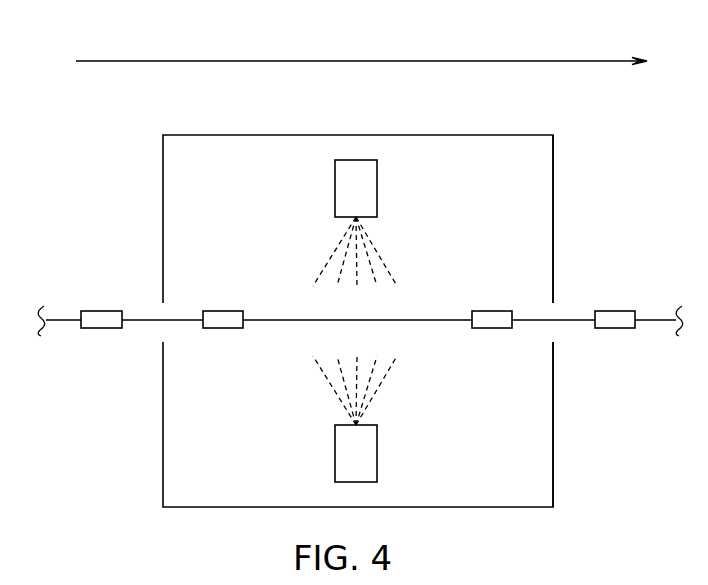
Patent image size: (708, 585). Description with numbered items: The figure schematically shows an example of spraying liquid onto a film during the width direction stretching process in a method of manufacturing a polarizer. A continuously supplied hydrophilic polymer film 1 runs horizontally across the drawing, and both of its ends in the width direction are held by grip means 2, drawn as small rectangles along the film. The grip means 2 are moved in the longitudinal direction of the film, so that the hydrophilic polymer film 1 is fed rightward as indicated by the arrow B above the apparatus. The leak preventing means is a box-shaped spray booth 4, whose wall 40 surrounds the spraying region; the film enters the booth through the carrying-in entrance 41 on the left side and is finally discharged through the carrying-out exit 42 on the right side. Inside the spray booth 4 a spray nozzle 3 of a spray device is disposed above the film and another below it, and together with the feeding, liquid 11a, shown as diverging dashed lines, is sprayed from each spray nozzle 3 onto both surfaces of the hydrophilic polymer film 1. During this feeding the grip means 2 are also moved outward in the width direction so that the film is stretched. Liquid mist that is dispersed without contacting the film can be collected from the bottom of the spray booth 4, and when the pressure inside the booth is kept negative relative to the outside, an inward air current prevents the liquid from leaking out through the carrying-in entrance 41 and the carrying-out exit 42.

The arrow indicating feeding direction B is at (361, 61).
The hydrophilic polymer film 1 is at (68, 322).
The grip means 2 is at (101, 318).
The spray nozzle 3 is at (368, 205).
The spray booth 4 is at (469, 135).
The chamber wall 40 is at (553, 196).
The carrying-in entrance 41 is at (163, 330).
The carrying-out exit 42 is at (554, 329).
The liquid 11a is at (347, 255).